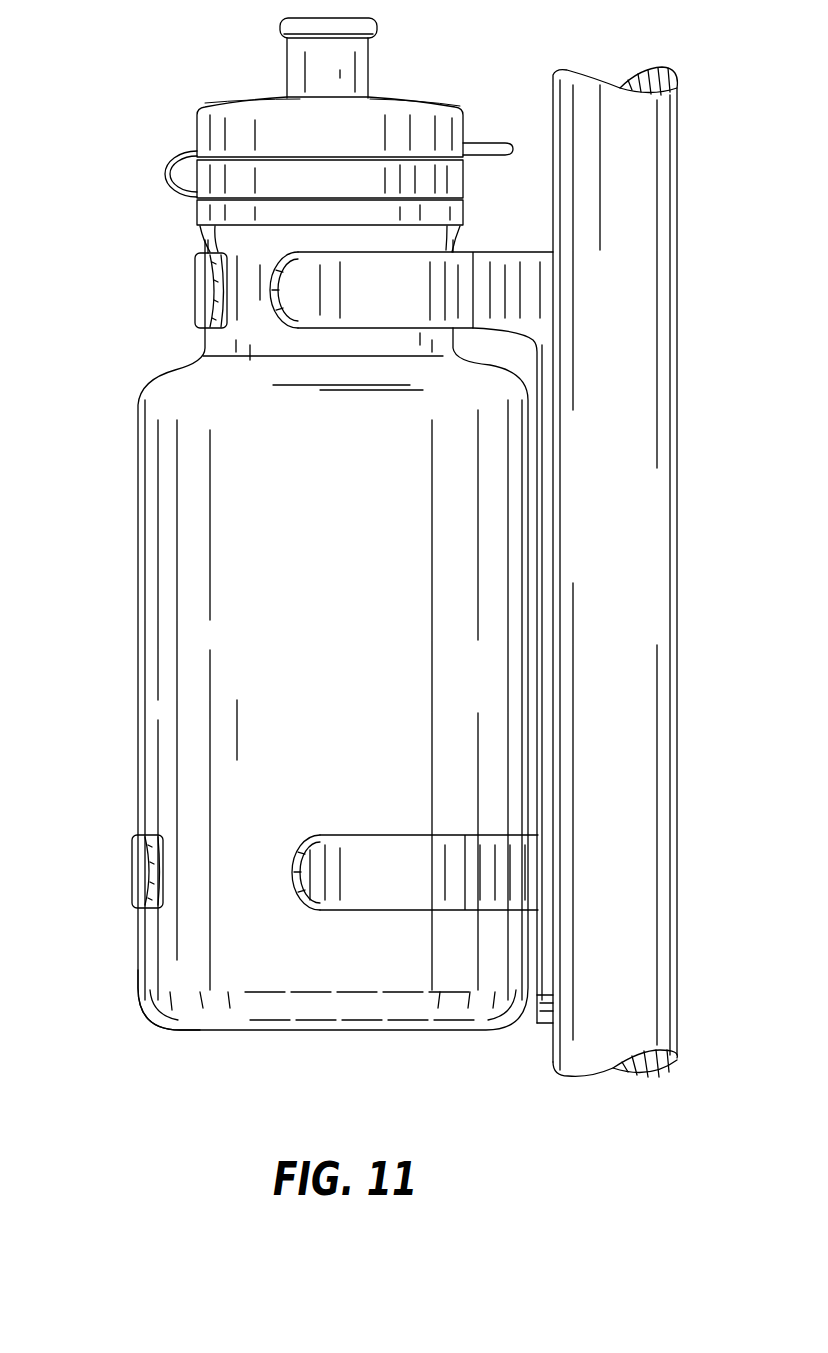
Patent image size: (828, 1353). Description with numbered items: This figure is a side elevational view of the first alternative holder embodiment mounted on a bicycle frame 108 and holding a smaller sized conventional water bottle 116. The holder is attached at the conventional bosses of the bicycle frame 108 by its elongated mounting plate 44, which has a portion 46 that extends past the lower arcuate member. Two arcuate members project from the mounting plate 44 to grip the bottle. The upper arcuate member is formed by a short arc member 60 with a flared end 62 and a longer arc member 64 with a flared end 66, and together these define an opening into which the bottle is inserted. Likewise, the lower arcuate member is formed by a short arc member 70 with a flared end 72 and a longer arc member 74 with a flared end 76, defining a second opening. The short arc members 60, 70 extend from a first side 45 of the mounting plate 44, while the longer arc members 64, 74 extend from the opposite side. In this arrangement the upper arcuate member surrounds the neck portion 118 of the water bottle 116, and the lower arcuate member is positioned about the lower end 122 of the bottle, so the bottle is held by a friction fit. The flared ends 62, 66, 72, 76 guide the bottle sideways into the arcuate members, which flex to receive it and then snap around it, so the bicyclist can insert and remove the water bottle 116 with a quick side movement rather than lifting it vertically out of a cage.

The mounting plate 44 is at (540, 641).
The first side of mounting plate 45 is at (548, 726).
The portion of mounting plate 46 is at (545, 1024).
The short arc member 60 is at (348, 318).
The flared end 62 is at (278, 312).
The longer arc member 64 is at (195, 303).
The flared end 66 is at (212, 274).
The short arc member 70 is at (357, 840).
The flared end 72 is at (293, 862).
The longer arc member 74 is at (132, 866).
The flared end 76 is at (163, 897).
The bicycle frame 108 is at (668, 681).
The water bottle 116 is at (158, 689).
The neck portion 118 is at (207, 244).
The lower end 122 is at (148, 979).